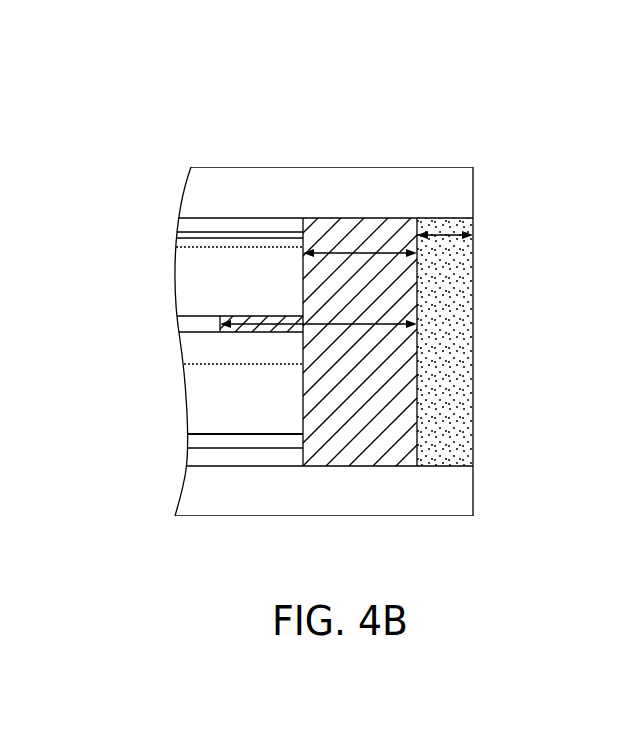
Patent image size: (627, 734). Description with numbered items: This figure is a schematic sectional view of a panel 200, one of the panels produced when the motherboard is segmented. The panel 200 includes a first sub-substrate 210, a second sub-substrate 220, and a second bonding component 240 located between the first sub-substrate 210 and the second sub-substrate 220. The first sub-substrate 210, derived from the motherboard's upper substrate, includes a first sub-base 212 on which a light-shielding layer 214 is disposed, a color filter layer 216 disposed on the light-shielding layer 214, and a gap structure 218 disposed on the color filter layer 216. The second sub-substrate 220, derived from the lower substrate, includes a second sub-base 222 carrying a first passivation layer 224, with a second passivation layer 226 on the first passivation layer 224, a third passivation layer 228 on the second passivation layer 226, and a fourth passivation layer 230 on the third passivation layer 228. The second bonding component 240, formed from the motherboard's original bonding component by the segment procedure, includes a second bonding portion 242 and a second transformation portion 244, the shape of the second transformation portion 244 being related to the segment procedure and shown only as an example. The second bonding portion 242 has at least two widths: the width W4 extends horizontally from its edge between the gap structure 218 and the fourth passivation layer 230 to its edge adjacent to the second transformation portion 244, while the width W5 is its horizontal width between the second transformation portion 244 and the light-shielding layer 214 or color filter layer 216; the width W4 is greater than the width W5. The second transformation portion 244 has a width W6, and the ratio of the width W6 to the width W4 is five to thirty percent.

The panel 200 is at (122, 58).
The first sub-substrate 210 is at (88, 182).
The first sub-base 212 is at (197, 193).
The light-shielding layer 214 is at (188, 223).
The color filter layer 216 is at (188, 238).
The gap structure 218 is at (183, 283).
The second sub-substrate 220 is at (88, 357).
The second sub-base 222 is at (192, 492).
The first passivation layer 224 is at (197, 458).
The second passivation layer 226 is at (197, 445).
The third passivation layer 228 is at (197, 400).
The fourth passivation layer 230 is at (192, 350).
The second bonding component 240 is at (555, 270).
The second bonding portion 242 is at (412, 277).
The second transformation portion 244 is at (430, 365).
The width W4 is at (260, 322).
The width W5 is at (352, 252).
The width W6 is at (440, 234).